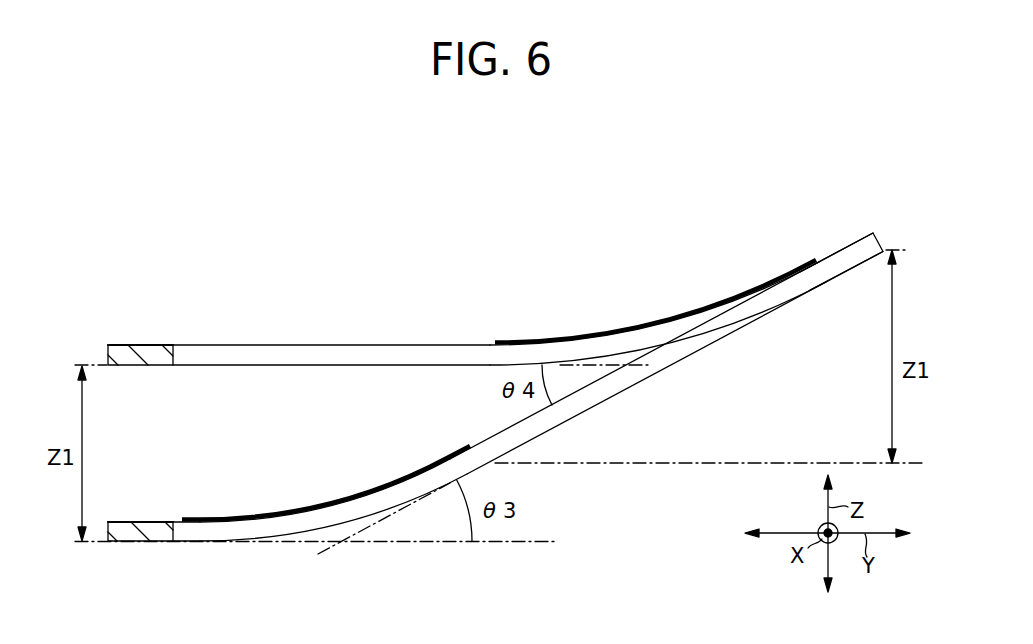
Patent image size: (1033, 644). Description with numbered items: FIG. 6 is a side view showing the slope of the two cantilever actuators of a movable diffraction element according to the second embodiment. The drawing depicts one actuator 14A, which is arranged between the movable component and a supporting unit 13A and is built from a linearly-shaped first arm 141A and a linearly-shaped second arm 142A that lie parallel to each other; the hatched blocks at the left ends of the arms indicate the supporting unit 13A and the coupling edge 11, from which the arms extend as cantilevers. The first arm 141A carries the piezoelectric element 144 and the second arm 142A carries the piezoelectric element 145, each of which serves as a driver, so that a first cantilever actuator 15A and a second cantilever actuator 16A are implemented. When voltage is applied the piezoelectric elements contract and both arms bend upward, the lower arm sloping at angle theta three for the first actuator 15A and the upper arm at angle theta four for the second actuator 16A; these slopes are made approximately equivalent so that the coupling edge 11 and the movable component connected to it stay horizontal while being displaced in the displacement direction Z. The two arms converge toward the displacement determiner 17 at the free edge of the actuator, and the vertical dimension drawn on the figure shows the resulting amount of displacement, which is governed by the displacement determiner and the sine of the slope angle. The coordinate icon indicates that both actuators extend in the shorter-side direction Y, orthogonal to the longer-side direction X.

The actuator 14A is at (186, 218).
The coupling edge 11 is at (147, 351).
The supporting unit 13A is at (148, 541).
The second arm 142A is at (330, 356).
The piezoelectric element 145 is at (662, 328).
The second cantilever actuator 16A is at (724, 288).
The displacement determiner 17 is at (736, 325).
The first arm 141A is at (284, 531).
The piezoelectric element 144 is at (308, 503).
The first cantilever actuator 15A is at (261, 497).